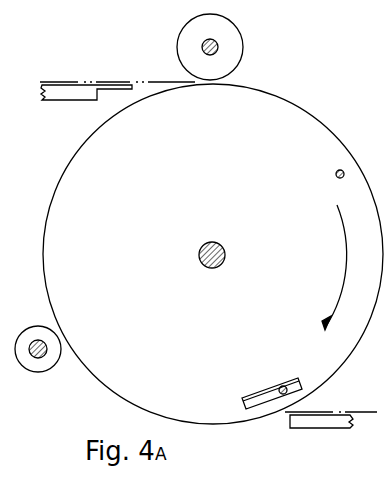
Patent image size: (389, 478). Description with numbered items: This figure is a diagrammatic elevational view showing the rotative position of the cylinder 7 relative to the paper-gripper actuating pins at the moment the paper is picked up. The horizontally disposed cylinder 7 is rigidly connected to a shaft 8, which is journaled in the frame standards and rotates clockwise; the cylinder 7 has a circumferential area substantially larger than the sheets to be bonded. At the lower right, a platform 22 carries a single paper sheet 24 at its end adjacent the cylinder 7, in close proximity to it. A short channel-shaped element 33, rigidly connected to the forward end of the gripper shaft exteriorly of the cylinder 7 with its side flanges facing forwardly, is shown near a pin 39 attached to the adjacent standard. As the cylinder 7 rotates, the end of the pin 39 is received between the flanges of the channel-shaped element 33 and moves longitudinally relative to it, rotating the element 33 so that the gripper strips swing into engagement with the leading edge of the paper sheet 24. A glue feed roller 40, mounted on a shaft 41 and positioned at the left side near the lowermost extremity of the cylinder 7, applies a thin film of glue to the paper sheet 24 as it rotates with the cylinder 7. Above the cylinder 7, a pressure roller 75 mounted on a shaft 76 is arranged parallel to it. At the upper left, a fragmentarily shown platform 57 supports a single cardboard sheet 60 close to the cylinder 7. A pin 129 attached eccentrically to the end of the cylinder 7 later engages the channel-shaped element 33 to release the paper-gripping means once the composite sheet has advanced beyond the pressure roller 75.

The cylinder 7 is at (323, 124).
The shaft 8 is at (212, 242).
The pin 129 is at (342, 170).
The pressure roller 75 is at (243, 57).
The shaft 76 is at (218, 48).
The cardboard sheet 60 is at (155, 80).
The platform 57 is at (80, 100).
The glue feed roller 40 is at (36, 326).
The shaft 41 is at (38, 358).
The channel-shaped element 33 is at (252, 393).
The pin 39 is at (282, 386).
The paper sheet 24 is at (325, 411).
The platform 22 is at (322, 429).